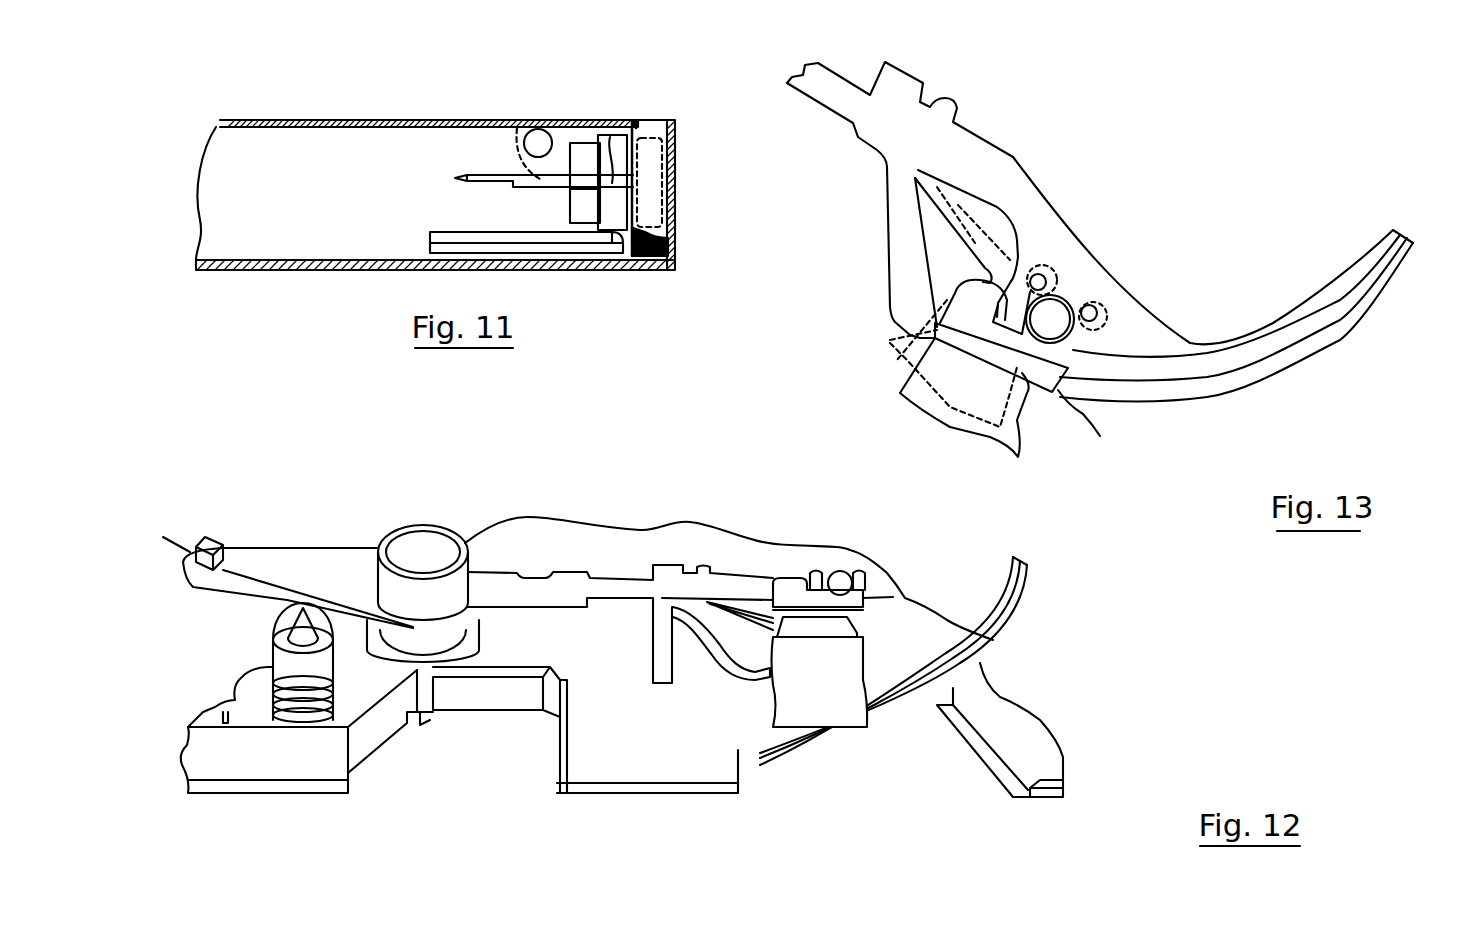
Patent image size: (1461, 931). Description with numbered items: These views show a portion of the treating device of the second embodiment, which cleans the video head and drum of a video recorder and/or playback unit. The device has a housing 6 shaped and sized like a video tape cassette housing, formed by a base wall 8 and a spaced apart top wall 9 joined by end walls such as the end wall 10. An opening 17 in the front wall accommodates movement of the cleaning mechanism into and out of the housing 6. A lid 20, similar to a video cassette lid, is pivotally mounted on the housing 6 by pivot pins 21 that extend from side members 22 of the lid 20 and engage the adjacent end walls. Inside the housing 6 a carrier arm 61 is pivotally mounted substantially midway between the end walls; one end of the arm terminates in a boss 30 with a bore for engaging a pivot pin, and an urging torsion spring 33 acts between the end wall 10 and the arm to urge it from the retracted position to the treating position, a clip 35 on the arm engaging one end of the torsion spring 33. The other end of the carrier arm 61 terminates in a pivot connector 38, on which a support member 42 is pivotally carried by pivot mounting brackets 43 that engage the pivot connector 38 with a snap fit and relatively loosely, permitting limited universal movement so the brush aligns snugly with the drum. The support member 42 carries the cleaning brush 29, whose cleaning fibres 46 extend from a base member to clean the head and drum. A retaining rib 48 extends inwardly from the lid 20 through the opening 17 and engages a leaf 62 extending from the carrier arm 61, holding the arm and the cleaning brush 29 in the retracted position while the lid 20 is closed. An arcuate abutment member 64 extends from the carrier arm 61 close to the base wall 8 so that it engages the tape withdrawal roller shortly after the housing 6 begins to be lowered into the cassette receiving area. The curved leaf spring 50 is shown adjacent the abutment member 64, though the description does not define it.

In FIG. 11, the housing 6 is at (272, 270).
In FIG. 12, the housing 6 is at (627, 562).
In FIG. 11, the base wall 8 is at (350, 270).
In FIG. 12, the base wall 8 is at (643, 793).
In FIG. 11, the top wall 9 is at (315, 120).
In FIG. 11, the end wall 10 is at (380, 147).
In FIG. 11, the opening 17 is at (650, 252).
In FIG. 11, the lid 20 is at (676, 150).
In FIG. 11, the pivot pin 21 is at (537, 132).
In FIG. 11, the side member 22 is at (514, 156).
In FIG. 11, the cleaning brush 29 is at (662, 188).
In FIG. 13, the cleaning brush 29 is at (1016, 454).
In FIG. 12, the cleaning brush 29 is at (805, 707).
In FIG. 12, the boss 30 is at (413, 520).
In FIG. 12, the urging torsion spring 33 is at (237, 568).
In FIG. 12, the clip 35 is at (203, 542).
In FIG. 13, the pivot connector 38 is at (1066, 296).
In FIG. 12, the pivot connector 38 is at (838, 571).
In FIG. 13, the support member 42 is at (1038, 374).
In FIG. 12, the support member 42 is at (920, 605).
In FIG. 13, the pivot mounting bracket 43 is at (1091, 305).
In FIG. 12, the pivot mounting bracket 43 is at (865, 577).
In FIG. 12, the cleaning fibres 46 is at (845, 707).
In FIG. 11, the retaining rib 48 is at (628, 147).
In FIG. 11, the leaf spring 50 is at (508, 244).
In FIG. 13, the leaf spring 50 is at (1243, 380).
In FIG. 12, the leaf spring 50 is at (993, 643).
In FIG. 11, the carrier arm 61 is at (458, 175).
In FIG. 13, the carrier arm 61 is at (918, 104).
In FIG. 12, the carrier arm 61 is at (677, 583).
In FIG. 11, the leaf 62 is at (613, 172).
In FIG. 12, the leaf 62 is at (750, 683).
In FIG. 13, the arcuate abutment member 64 is at (1160, 390).
In FIG. 12, the arcuate abutment member 64 is at (920, 683).